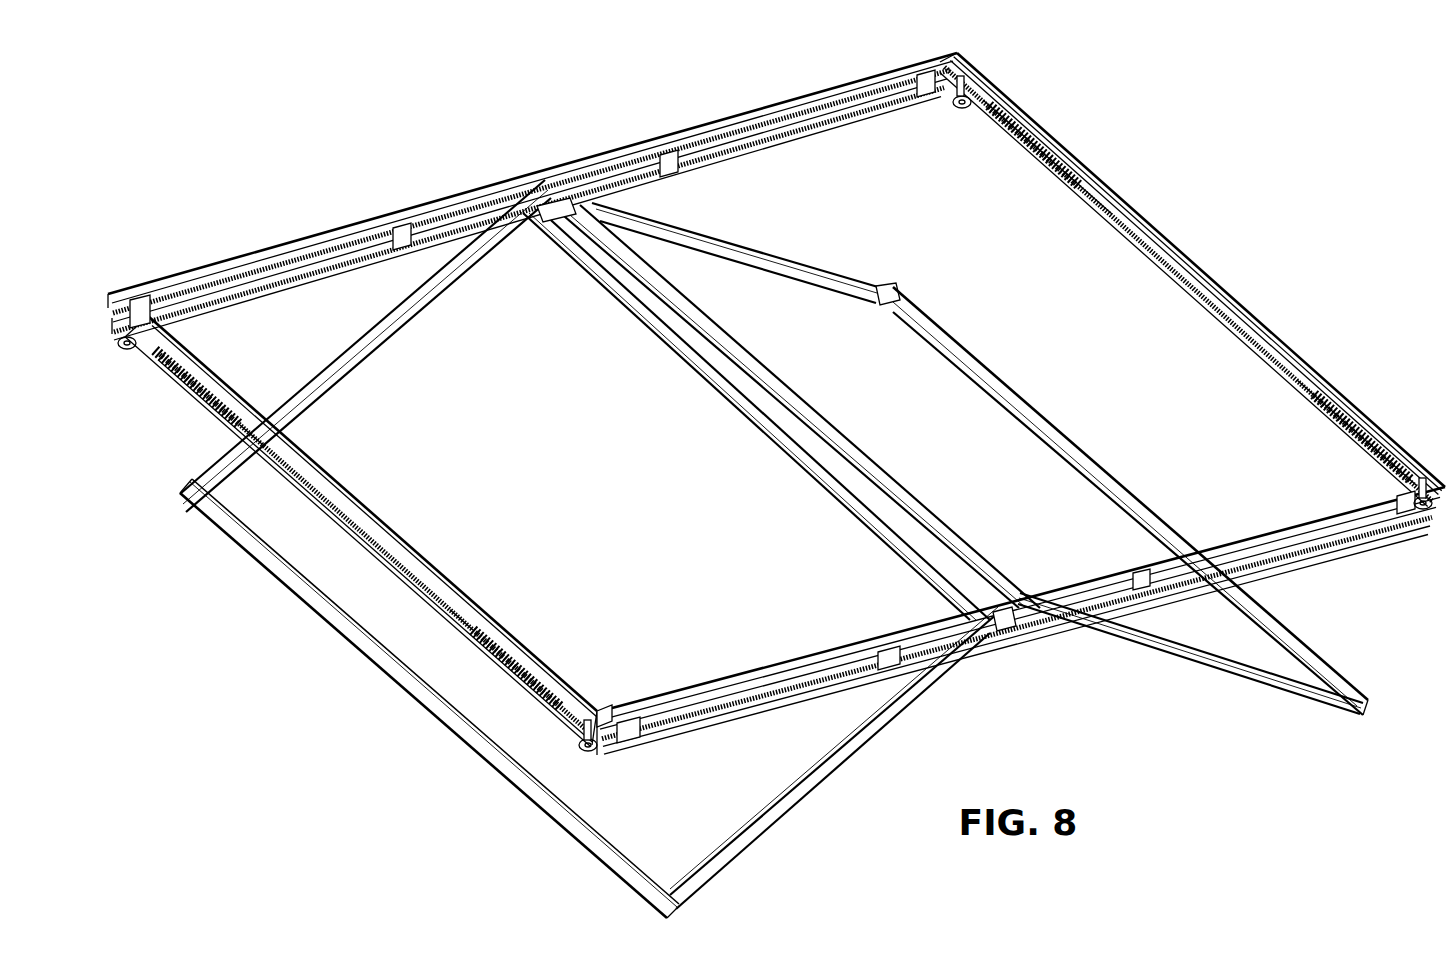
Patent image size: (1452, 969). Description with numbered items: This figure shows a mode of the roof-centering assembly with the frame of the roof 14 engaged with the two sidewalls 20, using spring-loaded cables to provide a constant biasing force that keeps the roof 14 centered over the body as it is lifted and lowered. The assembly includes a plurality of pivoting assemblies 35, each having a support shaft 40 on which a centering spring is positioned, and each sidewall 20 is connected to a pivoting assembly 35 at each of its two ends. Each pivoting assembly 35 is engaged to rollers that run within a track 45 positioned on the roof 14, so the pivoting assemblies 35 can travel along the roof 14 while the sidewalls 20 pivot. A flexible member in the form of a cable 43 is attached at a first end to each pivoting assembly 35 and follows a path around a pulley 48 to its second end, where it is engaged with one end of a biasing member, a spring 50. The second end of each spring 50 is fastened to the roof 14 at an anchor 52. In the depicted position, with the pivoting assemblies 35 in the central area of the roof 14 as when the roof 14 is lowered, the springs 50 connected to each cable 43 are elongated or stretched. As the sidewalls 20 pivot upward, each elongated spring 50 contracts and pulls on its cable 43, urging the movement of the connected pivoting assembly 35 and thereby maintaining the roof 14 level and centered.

The roof 14 is at (1131, 198).
The sidewall 20 is at (432, 719).
The pivoting assembly 35 is at (561, 213).
The support shaft 40 is at (1025, 598).
The cable 43 is at (876, 137).
The track 45 is at (300, 271).
The pulley 48 is at (957, 110).
The spring 50 is at (1048, 143).
The anchor 52 is at (607, 710).